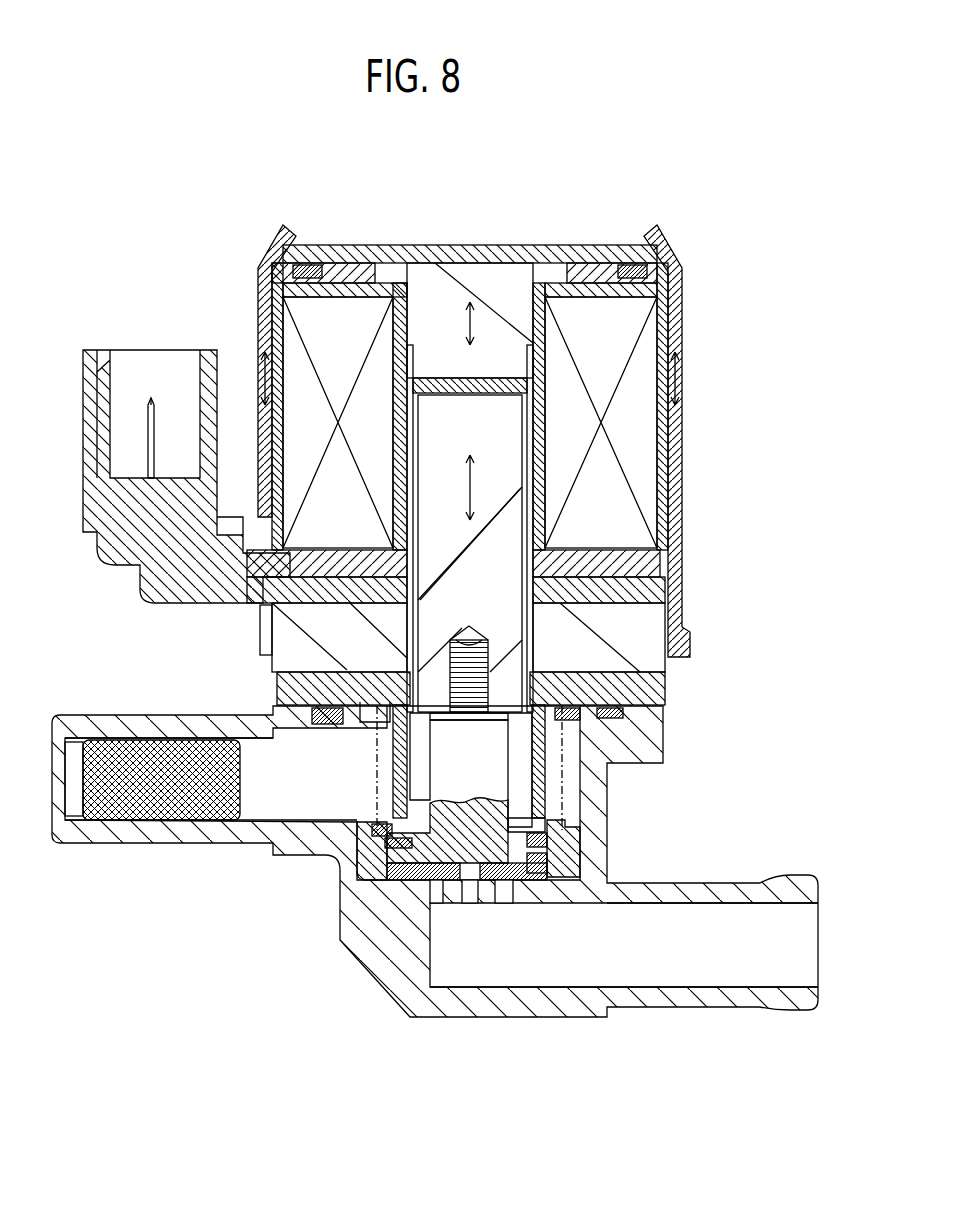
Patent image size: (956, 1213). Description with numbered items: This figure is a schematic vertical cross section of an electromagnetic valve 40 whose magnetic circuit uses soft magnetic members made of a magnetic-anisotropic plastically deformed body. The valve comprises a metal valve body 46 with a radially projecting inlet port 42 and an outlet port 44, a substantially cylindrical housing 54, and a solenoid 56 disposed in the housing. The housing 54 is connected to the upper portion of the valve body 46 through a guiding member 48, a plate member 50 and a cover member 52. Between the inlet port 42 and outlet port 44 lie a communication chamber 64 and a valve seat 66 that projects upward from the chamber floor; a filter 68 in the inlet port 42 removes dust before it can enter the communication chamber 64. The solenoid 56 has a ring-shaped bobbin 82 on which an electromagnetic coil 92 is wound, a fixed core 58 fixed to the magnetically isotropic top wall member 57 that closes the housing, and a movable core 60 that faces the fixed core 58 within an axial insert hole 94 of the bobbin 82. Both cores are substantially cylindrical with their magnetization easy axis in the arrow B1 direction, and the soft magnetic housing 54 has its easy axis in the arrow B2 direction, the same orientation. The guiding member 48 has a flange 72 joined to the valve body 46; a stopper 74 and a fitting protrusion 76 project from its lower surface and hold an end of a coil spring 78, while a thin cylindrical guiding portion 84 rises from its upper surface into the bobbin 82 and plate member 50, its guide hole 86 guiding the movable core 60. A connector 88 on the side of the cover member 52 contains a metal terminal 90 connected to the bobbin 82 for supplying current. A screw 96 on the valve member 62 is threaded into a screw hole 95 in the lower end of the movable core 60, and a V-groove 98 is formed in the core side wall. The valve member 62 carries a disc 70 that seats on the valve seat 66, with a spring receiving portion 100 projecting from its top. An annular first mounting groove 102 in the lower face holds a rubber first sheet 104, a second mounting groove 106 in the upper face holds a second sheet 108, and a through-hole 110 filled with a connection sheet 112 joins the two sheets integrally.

The electromagnetic valve 40 is at (170, 206).
The inlet port 42 is at (258, 822).
The outlet port 44 is at (628, 987).
The valve body 46 is at (385, 977).
The guiding member 48 is at (675, 704).
The plate member 50 is at (655, 655).
The cover member 52 is at (205, 580).
The housing 54 is at (676, 490).
The solenoid 56 is at (650, 431).
The top wall member 57 is at (575, 258).
The fixed core 58 is at (445, 278).
The movable core 60 is at (497, 430).
The valve member 62 is at (500, 764).
The communication chamber 64 is at (580, 847).
The valve seat 66 is at (520, 880).
The filter 68 is at (160, 822).
The disc 70 is at (370, 863).
The flange 72 is at (292, 693).
The stopper 74 is at (397, 757).
The fitting protrusion 76 is at (368, 710).
The coil spring 78 is at (352, 857).
The bobbin 82 is at (384, 470).
The guiding portion 84 is at (535, 630).
The guide hole 86 is at (413, 417).
The connector 88 is at (118, 550).
The terminal 90 is at (151, 398).
The electromagnetic coil 92 is at (640, 321).
The insert hole 94 is at (533, 312).
The screw hole 95 is at (460, 630).
The screw 96 is at (465, 714).
The V-groove 98 is at (530, 507).
The spring receiving portion 100 is at (385, 836).
The first mounting groove 102 is at (440, 890).
The first sheet 104 is at (478, 905).
The second mounting groove 106 is at (500, 820).
The second sheet 108 is at (545, 838).
The through-hole 110 is at (548, 864).
The connection sheet 112 is at (510, 885).
The arrow B1 direction B1 is at (486, 411).
The arrow B2 direction B2 is at (472, 378).